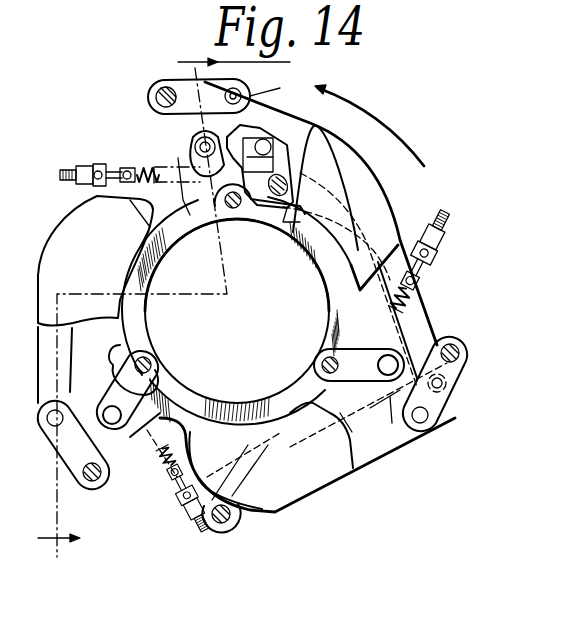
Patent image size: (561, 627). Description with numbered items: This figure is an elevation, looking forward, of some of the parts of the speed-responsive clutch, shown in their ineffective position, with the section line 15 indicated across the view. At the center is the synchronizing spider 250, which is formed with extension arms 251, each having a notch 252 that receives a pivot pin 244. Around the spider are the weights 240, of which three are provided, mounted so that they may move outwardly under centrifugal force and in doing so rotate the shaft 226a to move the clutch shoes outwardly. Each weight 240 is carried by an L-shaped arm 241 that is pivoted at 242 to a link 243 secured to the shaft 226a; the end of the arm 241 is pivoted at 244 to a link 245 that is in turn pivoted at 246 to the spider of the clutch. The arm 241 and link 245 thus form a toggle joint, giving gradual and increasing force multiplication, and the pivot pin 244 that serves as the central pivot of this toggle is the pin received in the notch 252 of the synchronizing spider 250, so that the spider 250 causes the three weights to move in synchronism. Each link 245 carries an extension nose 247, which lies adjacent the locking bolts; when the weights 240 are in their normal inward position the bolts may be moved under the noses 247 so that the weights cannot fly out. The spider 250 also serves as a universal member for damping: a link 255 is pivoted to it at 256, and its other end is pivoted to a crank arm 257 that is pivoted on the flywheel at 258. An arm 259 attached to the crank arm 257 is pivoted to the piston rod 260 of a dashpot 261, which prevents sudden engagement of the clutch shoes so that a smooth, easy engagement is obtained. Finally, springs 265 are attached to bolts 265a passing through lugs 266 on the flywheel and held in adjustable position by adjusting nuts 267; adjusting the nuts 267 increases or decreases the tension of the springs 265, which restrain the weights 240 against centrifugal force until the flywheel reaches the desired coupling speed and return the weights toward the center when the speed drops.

The section line 15- 15 is at (125, 305).
The shaft 226a is at (152, 96).
The weight 240 is at (60, 258).
The L-shaped arm 241 is at (180, 120).
The pivot 242 is at (250, 97).
The link 243 is at (207, 80).
The pivot pin 244 is at (195, 144).
The link 245 is at (215, 210).
The pivot 246 is at (233, 222).
The extension nose 247 is at (283, 217).
The synchronizing spider 250 is at (323, 307).
The extension arm 251 is at (190, 198).
The notch 252 is at (190, 132).
The link 255 is at (282, 152).
The pivot 256 is at (282, 110).
The crank arm 257 is at (282, 163).
The pivot 258 is at (282, 181).
The arm 259 is at (413, 307).
The piston rod 260 is at (387, 453).
The dashpot 261 is at (257, 521).
The spring 265 is at (158, 160).
The bolt 265a is at (449, 220).
The lug 266 is at (100, 150).
The adjusting nut 267 is at (78, 168).